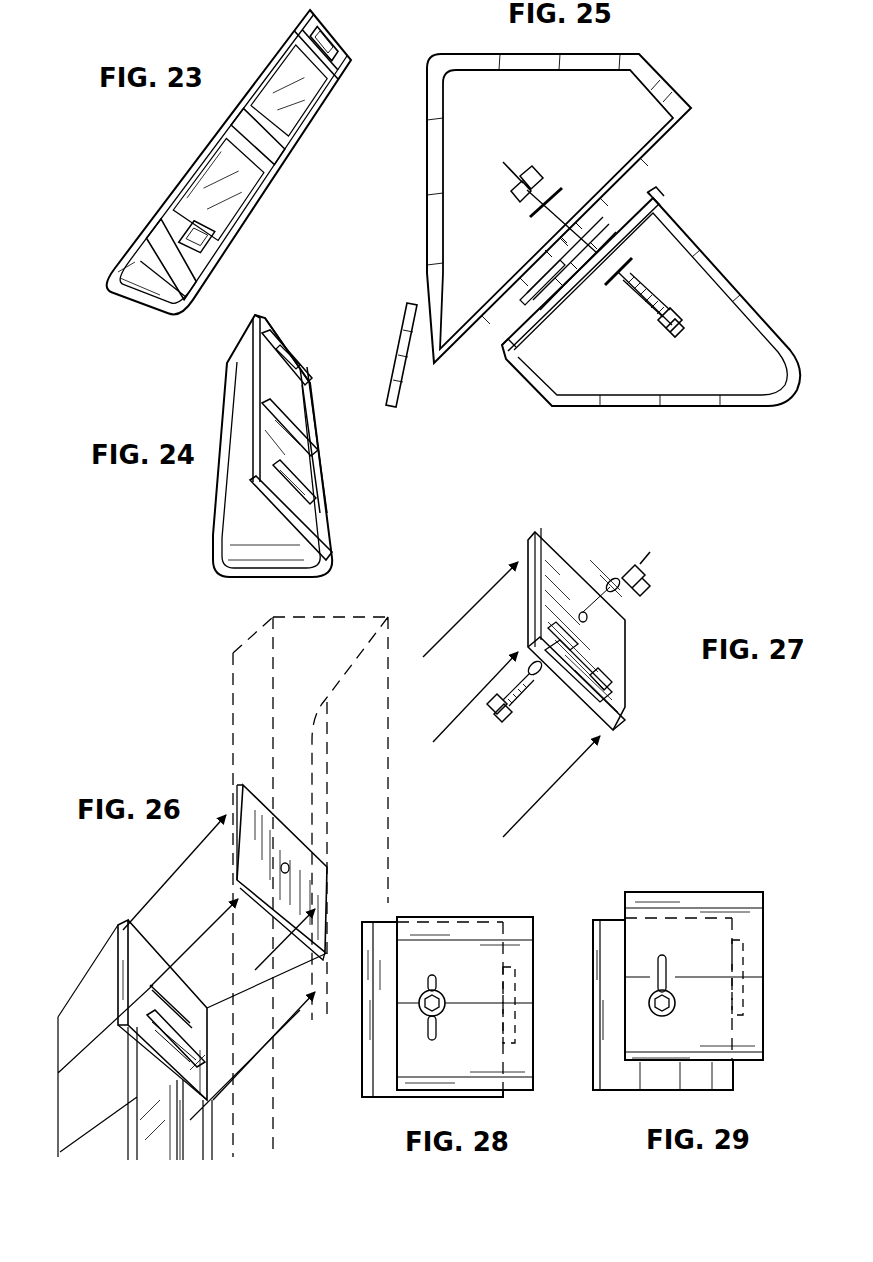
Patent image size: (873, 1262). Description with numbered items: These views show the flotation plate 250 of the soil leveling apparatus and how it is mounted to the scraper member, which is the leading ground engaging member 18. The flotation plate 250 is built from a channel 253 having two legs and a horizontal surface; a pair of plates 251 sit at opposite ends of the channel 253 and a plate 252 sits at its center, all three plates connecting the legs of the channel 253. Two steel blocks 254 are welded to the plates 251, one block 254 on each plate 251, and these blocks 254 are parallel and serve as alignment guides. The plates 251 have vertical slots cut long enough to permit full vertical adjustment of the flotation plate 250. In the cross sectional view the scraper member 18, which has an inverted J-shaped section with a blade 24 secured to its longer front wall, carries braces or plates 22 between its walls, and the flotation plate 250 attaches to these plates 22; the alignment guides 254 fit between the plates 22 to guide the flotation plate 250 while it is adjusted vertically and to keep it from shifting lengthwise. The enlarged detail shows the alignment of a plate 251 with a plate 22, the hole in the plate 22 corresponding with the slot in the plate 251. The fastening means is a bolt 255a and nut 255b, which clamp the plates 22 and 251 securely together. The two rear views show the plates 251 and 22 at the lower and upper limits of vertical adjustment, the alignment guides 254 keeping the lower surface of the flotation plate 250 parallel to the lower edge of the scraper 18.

In FIG. 25, the leading ground engaging member 18 is at (424, 186).
In FIG. 26, the leading ground engaging member 18 is at (358, 718).
In FIG. 25, the brace 22 is at (648, 152).
In FIG. 26, the brace 22 is at (305, 877).
In FIG. 27, the brace 22 is at (618, 620).
In FIG. 28, the brace 22 is at (382, 1030).
In FIG. 29, the brace 22 is at (620, 1080).
In FIG. 25, the blade 24 is at (408, 322).
In FIG. 23, the flotation plate 250 is at (137, 322).
In FIG. 24, the flotation plate 250 is at (272, 582).
In FIG. 25, the flotation plate 250 is at (657, 412).
In FIG. 23, the plate 251 is at (350, 66).
In FIG. 24, the plate 251 is at (308, 368).
In FIG. 25, the plate 251 is at (511, 340).
In FIG. 26, the plate 251 is at (140, 965).
In FIG. 27, the plate 251 is at (620, 720).
In FIG. 28, the plate 251 is at (520, 1063).
In FIG. 29, the plate 251 is at (745, 1038).
In FIG. 23, the center plate 252 is at (272, 152).
In FIG. 24, the center plate 252 is at (313, 434).
In FIG. 23, the channel 253 is at (97, 293).
In FIG. 24, the channel 253 is at (212, 565).
In FIG. 25, the channel 253 is at (740, 298).
In FIG. 26, the channel 253 is at (98, 993).
In FIG. 23, the steel block 254 is at (300, 38).
In FIG. 24, the steel block 254 is at (292, 355).
In FIG. 26, the steel block 254 is at (140, 1052).
In FIG. 27, the steel block 254 is at (618, 670).
In FIG. 28, the steel block 254 is at (510, 995).
In FIG. 29, the steel block 254 is at (735, 968).
In FIG. 25, the bolt 255a is at (672, 338).
In FIG. 27, the bolt 255a is at (497, 712).
In FIG. 28, the bolt 255a is at (436, 1000).
In FIG. 29, the bolt 255a is at (667, 998).
In FIG. 25, the nut 255b is at (533, 170).
In FIG. 27, the nut 255b is at (622, 556).